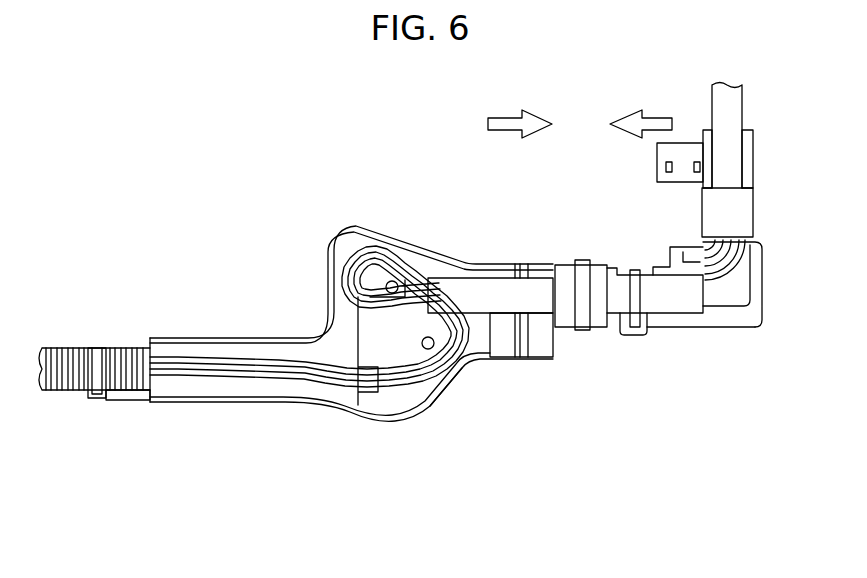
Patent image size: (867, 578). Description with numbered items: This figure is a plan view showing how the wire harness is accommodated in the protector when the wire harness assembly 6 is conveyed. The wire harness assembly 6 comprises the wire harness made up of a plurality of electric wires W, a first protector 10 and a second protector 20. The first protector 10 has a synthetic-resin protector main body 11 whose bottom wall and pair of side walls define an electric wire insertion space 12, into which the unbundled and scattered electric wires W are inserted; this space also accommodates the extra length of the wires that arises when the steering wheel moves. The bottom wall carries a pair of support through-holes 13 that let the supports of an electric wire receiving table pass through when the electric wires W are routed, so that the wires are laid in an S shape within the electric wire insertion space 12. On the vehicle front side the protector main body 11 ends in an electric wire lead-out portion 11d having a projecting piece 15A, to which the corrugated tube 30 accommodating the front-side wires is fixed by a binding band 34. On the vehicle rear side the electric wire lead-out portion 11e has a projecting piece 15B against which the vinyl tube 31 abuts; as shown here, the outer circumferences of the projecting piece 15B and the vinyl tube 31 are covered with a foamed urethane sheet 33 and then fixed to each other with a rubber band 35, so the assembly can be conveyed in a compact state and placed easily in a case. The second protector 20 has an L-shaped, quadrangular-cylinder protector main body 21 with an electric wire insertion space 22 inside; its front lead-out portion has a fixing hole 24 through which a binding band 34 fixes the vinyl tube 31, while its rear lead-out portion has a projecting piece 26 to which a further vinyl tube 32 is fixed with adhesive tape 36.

The wire harness assembly 6 is at (475, 466).
The first protector 10 is at (356, 370).
The protector main body 11 is at (392, 428).
The electric wire lead-out portion 11d is at (148, 340).
The electric wire lead-out portion 11e is at (556, 342).
The electric wire insertion space 12 is at (372, 352).
The support through-holes 13 is at (396, 281).
The projecting piece 15A is at (130, 402).
The projecting piece 15B is at (613, 272).
The second protector 20 is at (760, 327).
The protector main body 21 is at (703, 330).
The electric wire insertion space 22 is at (705, 253).
The fixing hole 24 is at (641, 338).
The projecting piece 26 is at (753, 152).
The corrugated tube 30 is at (62, 392).
The vinyl tube 31 is at (543, 283).
The vinyl tube 32 is at (744, 96).
The foamed urethane sheet 33 is at (598, 330).
The binding band 34 is at (96, 348).
The rubber band 35 is at (583, 268).
The adhesive tape 36 is at (755, 205).
The electric wires W is at (275, 385).